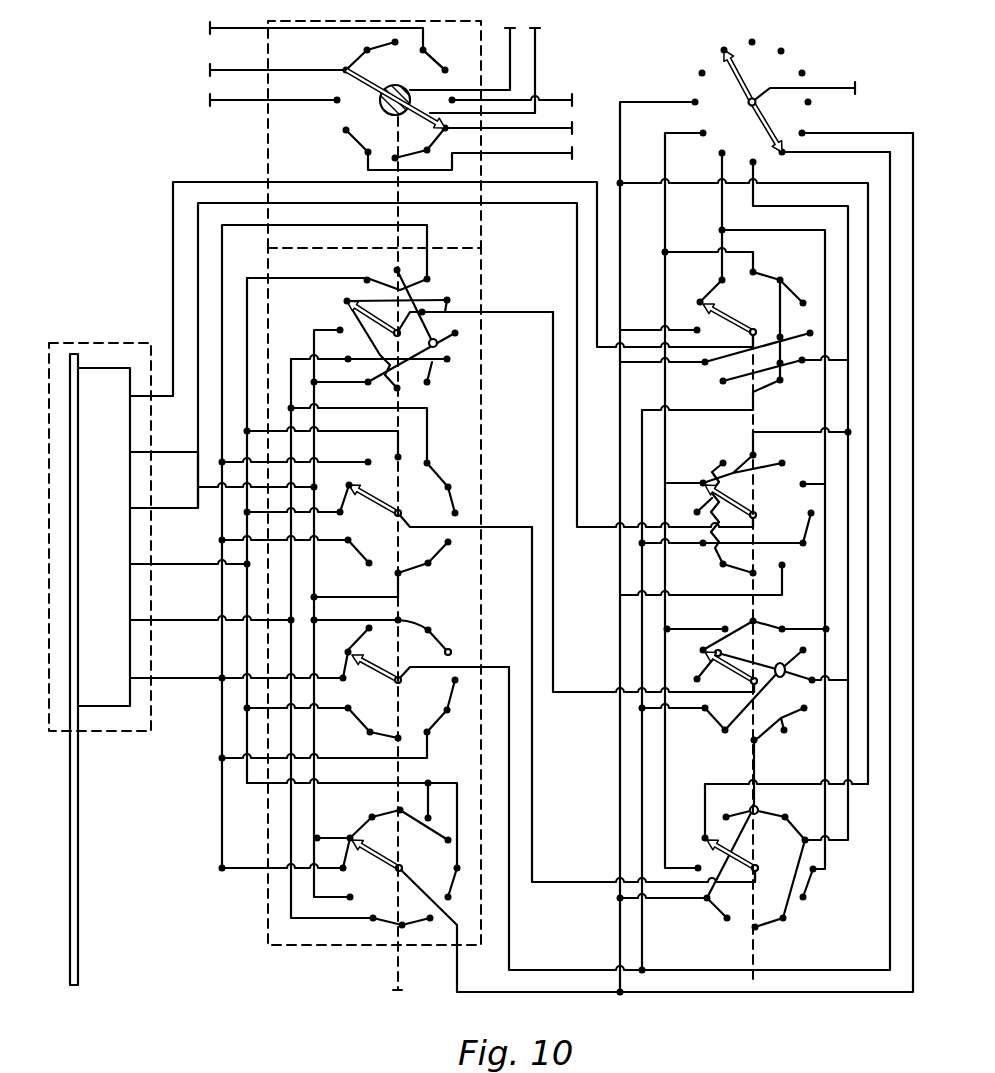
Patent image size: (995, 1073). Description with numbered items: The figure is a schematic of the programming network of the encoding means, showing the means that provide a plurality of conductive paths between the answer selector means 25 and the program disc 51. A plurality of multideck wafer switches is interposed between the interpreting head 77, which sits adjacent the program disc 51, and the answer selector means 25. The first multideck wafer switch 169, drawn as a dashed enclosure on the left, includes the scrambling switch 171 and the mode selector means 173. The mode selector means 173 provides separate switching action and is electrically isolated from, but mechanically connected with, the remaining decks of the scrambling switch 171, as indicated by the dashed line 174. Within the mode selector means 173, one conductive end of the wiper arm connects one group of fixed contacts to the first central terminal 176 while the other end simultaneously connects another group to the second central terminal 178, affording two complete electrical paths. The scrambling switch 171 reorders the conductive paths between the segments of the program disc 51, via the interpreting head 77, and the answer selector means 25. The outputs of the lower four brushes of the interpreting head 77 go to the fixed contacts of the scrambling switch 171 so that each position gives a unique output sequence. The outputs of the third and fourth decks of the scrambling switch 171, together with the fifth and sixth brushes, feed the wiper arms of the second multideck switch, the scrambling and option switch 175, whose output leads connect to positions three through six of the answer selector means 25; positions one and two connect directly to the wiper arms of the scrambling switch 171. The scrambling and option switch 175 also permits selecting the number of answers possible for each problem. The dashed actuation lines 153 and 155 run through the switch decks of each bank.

The answer selector means 25 is at (803, 47).
The program disc 51 is at (80, 823).
The interpreting head 77 is at (110, 695).
The relay actuation line (left bank) 153 is at (403, 983).
The relay actuation line (right bank) 155 is at (755, 982).
The first multideck wafer switch 169 is at (383, 600).
The scrambling switch 171 is at (330, 938).
The mode selector means 173 is at (268, 122).
The dashed line 174 is at (400, 608).
The scrambling and option switch 175 is at (831, 956).
The first central terminal 176 is at (395, 88).
The second central terminal 178 is at (395, 103).